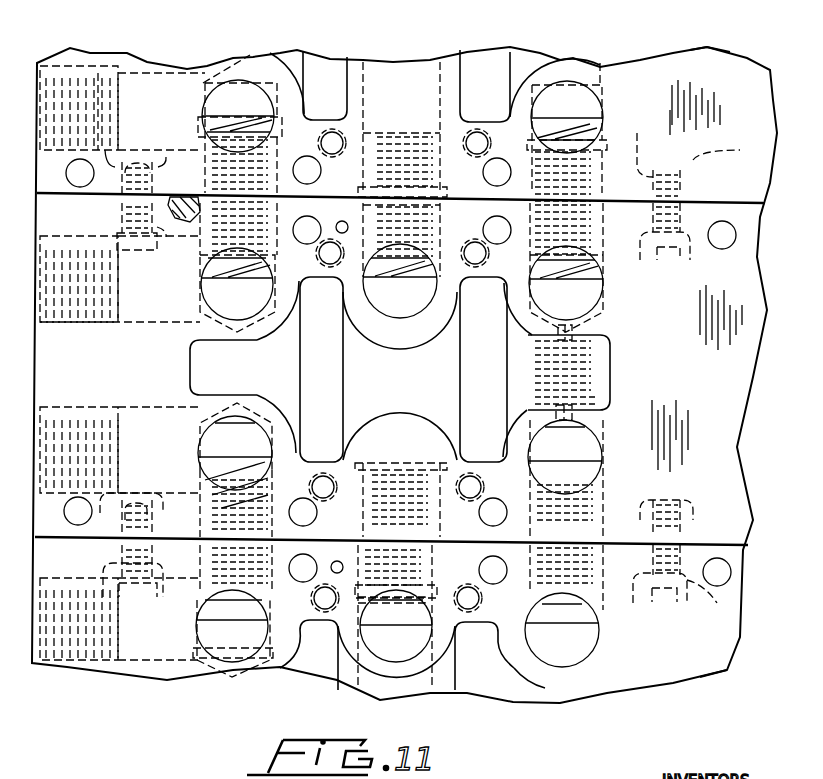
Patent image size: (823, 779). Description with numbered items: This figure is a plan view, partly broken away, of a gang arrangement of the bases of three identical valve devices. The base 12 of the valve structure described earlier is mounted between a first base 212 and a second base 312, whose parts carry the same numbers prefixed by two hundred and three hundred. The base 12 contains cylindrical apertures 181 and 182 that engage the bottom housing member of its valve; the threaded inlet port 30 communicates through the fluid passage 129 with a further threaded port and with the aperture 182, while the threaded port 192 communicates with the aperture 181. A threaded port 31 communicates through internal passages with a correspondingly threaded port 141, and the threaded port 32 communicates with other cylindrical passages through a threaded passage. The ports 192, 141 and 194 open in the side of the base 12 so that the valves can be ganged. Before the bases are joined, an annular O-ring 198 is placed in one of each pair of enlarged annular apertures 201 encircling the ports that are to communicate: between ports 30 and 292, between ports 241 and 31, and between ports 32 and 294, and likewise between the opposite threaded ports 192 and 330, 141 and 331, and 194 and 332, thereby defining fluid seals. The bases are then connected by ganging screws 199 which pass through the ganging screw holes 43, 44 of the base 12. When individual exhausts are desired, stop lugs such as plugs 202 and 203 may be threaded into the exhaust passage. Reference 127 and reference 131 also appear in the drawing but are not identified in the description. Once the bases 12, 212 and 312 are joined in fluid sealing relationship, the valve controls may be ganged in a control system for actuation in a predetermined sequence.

The base 12 is at (717, 372).
The threaded inlet port 30 is at (275, 495).
The threaded port 31 is at (440, 522).
The threaded port 32 is at (590, 518).
The ganging screw hole 43 is at (113, 210).
The ganging screw hole 44 is at (680, 213).
The rib 127 is at (67, 317).
The fluid passage 129 is at (152, 318).
The recess 131 is at (233, 370).
The threaded port 141 is at (438, 228).
The cylindrical aperture 181 is at (203, 304).
The cylindrical aperture 182 is at (200, 430).
The threaded port 192 is at (273, 236).
The threaded port 194 is at (611, 262).
The O-ring seal 198 is at (193, 203).
The ganging screw 199 is at (113, 231).
The enlarged annular aperture 201 is at (192, 200).
The stop lug 202 is at (603, 397).
The stop lug 203 is at (607, 352).
The first base 212 is at (709, 656).
The port 241 is at (430, 590).
The port 292 is at (260, 598).
The port 294 is at (603, 610).
The second base 312 is at (713, 60).
The threaded port 330 is at (293, 147).
The threaded port 331 is at (433, 174).
The threaded port 332 is at (600, 157).